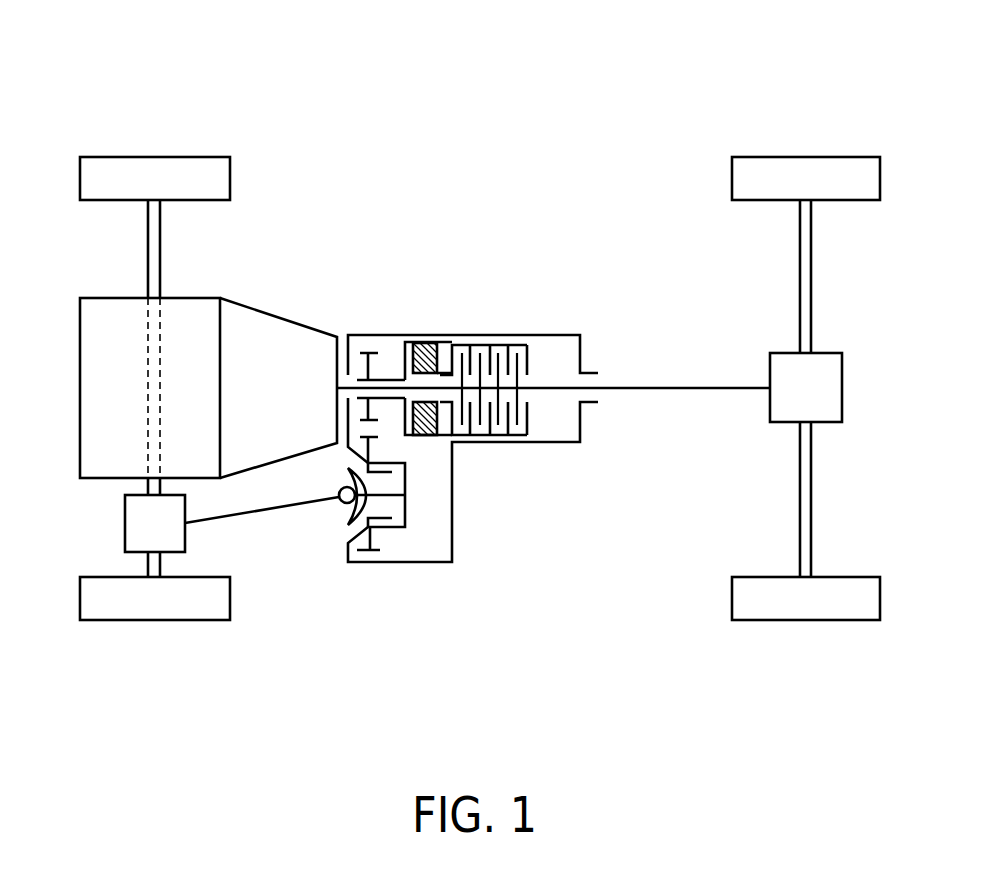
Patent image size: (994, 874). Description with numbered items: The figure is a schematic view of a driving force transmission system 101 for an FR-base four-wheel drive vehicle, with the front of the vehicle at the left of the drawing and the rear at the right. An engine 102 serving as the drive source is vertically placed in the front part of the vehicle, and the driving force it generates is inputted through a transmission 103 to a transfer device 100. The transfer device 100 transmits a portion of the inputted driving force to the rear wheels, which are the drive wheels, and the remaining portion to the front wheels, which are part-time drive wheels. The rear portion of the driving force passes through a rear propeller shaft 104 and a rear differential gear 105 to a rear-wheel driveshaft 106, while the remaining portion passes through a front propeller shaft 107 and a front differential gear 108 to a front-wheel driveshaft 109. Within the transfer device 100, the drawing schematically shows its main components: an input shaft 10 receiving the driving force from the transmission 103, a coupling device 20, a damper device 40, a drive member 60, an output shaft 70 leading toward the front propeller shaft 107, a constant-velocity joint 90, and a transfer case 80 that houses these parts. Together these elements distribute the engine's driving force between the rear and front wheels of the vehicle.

The input shaft 10 is at (387, 386).
The coupling device 20 is at (530, 353).
The damper device 40 is at (422, 342).
The drive member 60 is at (367, 352).
The output shaft 70 is at (387, 530).
The transfer case 80 is at (454, 505).
The constant-velocity joint 90 is at (345, 510).
The transfer device 100 is at (470, 344).
The driving force transmission system 101 is at (472, 166).
The engine 102 is at (103, 310).
The transmission 103 is at (258, 330).
The rear propeller shaft 104 is at (662, 387).
The rear differential gear 105 is at (835, 378).
The rear-wheel driveshaft 106 is at (806, 257).
The front propeller shaft 107 is at (248, 520).
The front differential gear 108 is at (133, 522).
The front-wheel driveshaft 109 is at (160, 242).